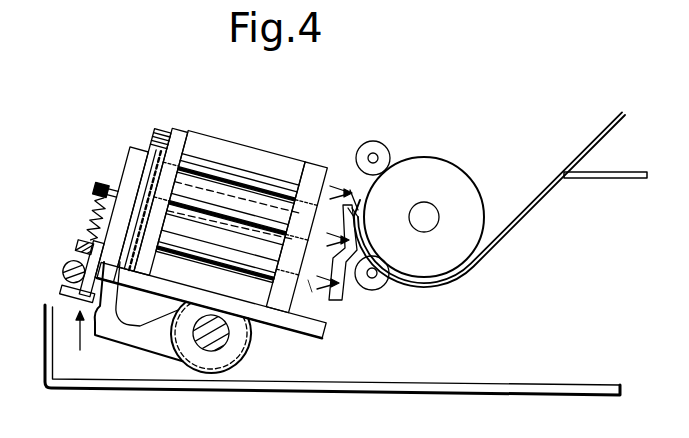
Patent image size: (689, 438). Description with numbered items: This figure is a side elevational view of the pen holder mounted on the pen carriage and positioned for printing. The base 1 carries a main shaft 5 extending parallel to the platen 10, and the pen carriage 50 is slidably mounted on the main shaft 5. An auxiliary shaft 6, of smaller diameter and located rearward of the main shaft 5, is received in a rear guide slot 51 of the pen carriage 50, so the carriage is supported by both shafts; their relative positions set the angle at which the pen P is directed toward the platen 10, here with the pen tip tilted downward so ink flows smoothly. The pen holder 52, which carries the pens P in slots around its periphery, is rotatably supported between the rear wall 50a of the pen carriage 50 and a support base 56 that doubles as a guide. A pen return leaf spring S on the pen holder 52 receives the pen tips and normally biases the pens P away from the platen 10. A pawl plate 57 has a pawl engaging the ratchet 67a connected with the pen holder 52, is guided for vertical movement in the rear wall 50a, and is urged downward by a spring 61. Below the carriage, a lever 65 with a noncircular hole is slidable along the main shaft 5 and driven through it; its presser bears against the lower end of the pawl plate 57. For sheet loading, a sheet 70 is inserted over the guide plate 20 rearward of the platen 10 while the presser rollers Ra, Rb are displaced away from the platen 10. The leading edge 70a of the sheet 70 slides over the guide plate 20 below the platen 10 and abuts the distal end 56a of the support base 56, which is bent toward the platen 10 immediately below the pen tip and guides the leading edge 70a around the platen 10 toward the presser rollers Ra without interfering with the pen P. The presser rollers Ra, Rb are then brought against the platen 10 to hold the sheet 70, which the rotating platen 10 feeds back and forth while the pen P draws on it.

The base 1 is at (235, 388).
The main shaft 5 is at (210, 338).
The auxiliary shaft 6 is at (64, 272).
The platen 10 is at (460, 188).
The guide plate 20 is at (604, 179).
The pen carriage 50 is at (320, 338).
The rear wall 50a is at (148, 150).
The rear guide slot 51 is at (80, 245).
The pen holder 52 is at (182, 132).
The support base 56 is at (340, 300).
The distal end 56a is at (366, 206).
The pawl plate 57 is at (147, 172).
The spring 61 is at (100, 208).
The lever 65 is at (136, 340).
The ratchet 67a is at (162, 130).
The sheet 70 is at (590, 146).
The leading edge 70a is at (360, 222).
The pen P is at (350, 190).
The presser roller Ra is at (384, 152).
The presser roller Rb is at (386, 282).
The pen return leaf spring S is at (310, 284).